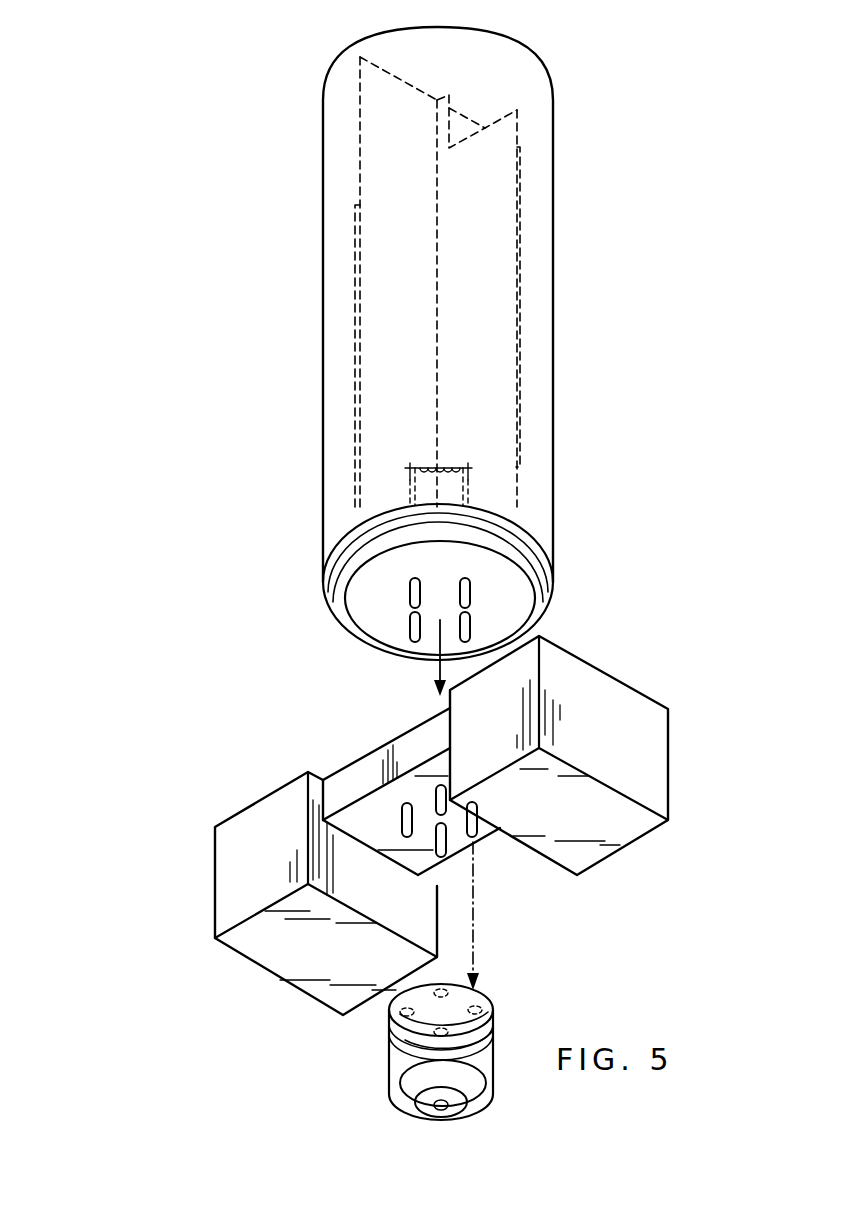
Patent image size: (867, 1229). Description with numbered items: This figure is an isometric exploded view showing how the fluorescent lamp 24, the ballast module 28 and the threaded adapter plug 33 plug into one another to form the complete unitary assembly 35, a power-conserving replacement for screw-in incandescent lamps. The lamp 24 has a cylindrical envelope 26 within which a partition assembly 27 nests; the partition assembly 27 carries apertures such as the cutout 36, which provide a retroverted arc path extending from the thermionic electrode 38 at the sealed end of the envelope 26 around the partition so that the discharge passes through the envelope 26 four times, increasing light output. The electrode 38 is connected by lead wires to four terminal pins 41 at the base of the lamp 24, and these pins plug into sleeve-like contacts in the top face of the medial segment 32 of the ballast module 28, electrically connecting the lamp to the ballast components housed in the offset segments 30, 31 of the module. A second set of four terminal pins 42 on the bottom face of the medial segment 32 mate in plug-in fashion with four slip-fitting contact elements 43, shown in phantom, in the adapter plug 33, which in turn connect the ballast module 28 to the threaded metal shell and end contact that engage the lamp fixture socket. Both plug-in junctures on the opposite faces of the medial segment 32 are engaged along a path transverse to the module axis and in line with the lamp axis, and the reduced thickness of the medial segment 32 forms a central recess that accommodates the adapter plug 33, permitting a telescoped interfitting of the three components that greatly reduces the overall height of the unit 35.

The fluorescent lamp 24 is at (320, 244).
The cylindrical envelope 26 is at (336, 363).
The partition assembly 27 is at (495, 200).
The ballast module 28 is at (653, 684).
The offset segment 30 is at (660, 738).
The offset segment 31 is at (232, 822).
The medial segment 32 is at (347, 766).
The threaded adapter plug 33 is at (480, 1041).
The unitary assembly 35 is at (92, 485).
The aperture or cutout 36 is at (475, 112).
The thermionic electrode 38 is at (447, 466).
The terminal pins 41 is at (414, 598).
The terminal pins 42 is at (433, 858).
The contact elements 43 is at (438, 1033).